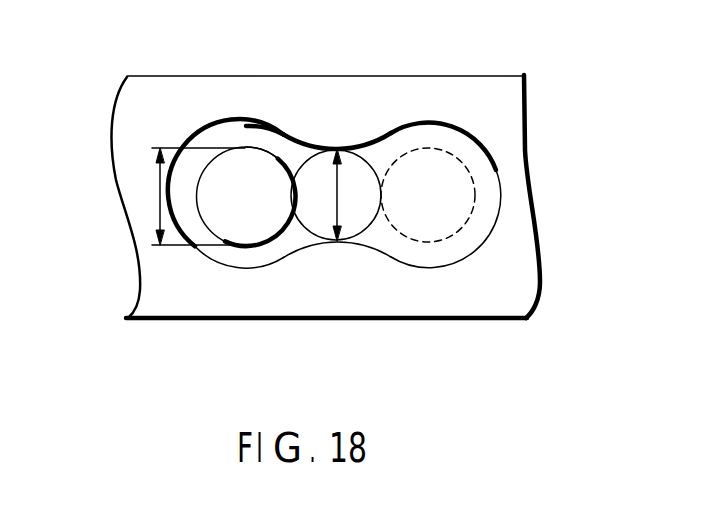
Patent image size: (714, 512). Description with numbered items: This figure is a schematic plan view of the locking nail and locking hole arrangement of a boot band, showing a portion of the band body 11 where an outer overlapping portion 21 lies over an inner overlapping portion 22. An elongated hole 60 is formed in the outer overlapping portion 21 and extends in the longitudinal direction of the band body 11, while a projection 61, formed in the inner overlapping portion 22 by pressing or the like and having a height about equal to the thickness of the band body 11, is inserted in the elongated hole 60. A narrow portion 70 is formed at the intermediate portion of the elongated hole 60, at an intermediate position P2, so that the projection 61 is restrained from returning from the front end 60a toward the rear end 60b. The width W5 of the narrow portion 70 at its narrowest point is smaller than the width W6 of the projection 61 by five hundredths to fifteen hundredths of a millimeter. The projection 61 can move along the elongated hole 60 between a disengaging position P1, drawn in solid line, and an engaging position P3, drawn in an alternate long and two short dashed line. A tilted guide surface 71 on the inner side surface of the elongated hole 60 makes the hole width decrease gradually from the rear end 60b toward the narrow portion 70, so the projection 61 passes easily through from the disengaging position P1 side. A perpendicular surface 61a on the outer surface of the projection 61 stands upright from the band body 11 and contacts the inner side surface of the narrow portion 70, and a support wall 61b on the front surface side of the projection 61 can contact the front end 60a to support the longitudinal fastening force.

The band body 11 is at (508, 102).
The outer overlapping portion 21 is at (178, 76).
The inner overlapping portion 22 is at (163, 319).
The elongated hole 60 is at (425, 123).
The front end 60a is at (493, 187).
The rear end 60b is at (177, 193).
The projection 61 is at (250, 163).
The perpendicular surface 61a is at (288, 215).
The support wall 61b is at (290, 190).
The narrow portion 70 is at (312, 142).
The tilted guide surface 71 is at (290, 152).
The disengaging position P1 is at (268, 250).
The intermediate position P2 is at (370, 247).
The engaging position P3 is at (455, 248).
The width of the narrow portion W5 is at (337, 180).
The width of the projection W6 is at (158, 194).